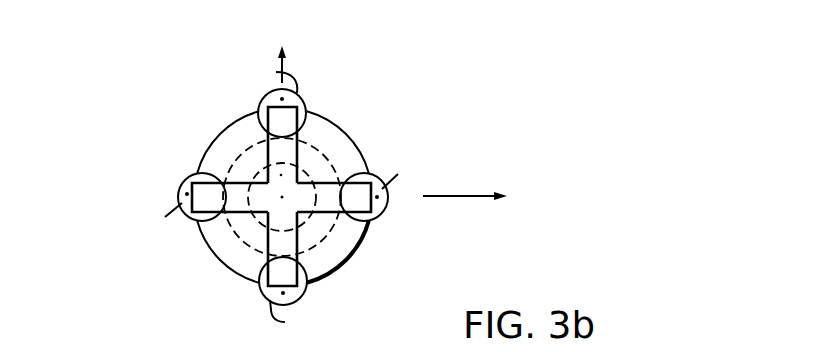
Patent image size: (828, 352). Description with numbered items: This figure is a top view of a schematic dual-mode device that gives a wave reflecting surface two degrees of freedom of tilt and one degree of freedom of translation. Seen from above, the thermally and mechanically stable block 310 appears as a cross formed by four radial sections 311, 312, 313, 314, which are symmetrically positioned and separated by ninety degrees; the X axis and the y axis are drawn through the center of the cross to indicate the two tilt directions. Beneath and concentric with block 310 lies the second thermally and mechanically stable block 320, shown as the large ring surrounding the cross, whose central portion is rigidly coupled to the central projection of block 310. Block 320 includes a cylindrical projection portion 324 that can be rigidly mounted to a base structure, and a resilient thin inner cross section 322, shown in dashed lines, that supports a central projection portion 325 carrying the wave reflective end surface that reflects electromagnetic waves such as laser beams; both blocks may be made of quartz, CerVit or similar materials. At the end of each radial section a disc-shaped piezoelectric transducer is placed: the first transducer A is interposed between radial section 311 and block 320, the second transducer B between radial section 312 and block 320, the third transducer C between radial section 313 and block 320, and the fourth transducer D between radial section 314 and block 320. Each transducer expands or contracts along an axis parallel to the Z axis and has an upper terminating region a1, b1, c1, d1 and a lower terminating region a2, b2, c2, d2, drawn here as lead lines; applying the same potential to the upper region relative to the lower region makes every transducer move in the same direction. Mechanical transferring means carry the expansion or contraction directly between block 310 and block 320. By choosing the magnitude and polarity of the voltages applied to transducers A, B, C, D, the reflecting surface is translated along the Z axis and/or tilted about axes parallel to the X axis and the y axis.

The thermally and mechanically stable block 310 is at (281, 205).
The radial section 311 is at (275, 148).
The radial section 312 is at (330, 182).
The radial section 313 is at (237, 215).
The radial section 314 is at (266, 255).
The second thermally and mechanically stable block 320 is at (281, 203).
The resilient thin inner cross section 322 is at (323, 150).
The cylindrical projection portion 324 is at (351, 239).
The central projection portion 325 is at (224, 267).
The first transducer A is at (299, 99).
The second transducer B is at (382, 213).
The third transducer C is at (182, 215).
The fourth transducer D is at (266, 300).
The upper terminating region a1 is at (282, 98).
The lower terminating region a2 is at (276, 72).
The upper terminating region b1 is at (378, 198).
The lower terminating region b2 is at (398, 174).
The upper terminating region c1 is at (187, 193).
The lower terminating region c2 is at (165, 217).
The upper terminating region d1 is at (283, 293).
The lower terminating region d2 is at (285, 322).
The X axis X is at (282, 54).
The Y axis y is at (474, 196).